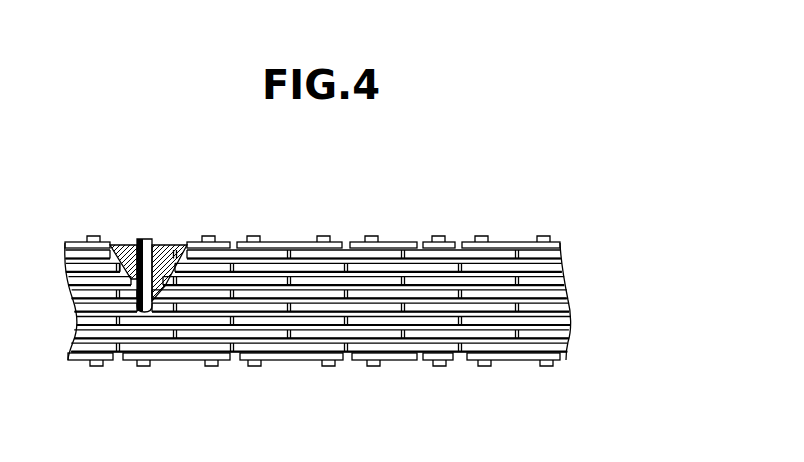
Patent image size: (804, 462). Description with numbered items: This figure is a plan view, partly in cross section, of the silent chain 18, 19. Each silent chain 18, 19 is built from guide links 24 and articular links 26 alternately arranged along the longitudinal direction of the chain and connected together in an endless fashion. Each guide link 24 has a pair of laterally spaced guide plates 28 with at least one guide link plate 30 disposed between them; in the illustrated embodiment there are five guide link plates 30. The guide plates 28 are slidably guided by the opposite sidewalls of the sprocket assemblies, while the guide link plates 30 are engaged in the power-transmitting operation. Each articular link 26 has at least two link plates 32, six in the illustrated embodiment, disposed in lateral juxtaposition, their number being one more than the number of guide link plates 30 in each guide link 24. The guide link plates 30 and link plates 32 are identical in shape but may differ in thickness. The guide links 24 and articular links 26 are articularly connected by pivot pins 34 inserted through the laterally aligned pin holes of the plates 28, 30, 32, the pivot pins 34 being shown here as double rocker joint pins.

The silent chain 18 is at (513, 194).
The silent chain 19 is at (318, 301).
The guide link 24 is at (397, 241).
The articular link 26 is at (345, 241).
The guide plate 28 is at (418, 242).
The guide link plate 30 is at (393, 358).
The link plate 32 is at (337, 361).
The pivot pin 34 is at (140, 238).